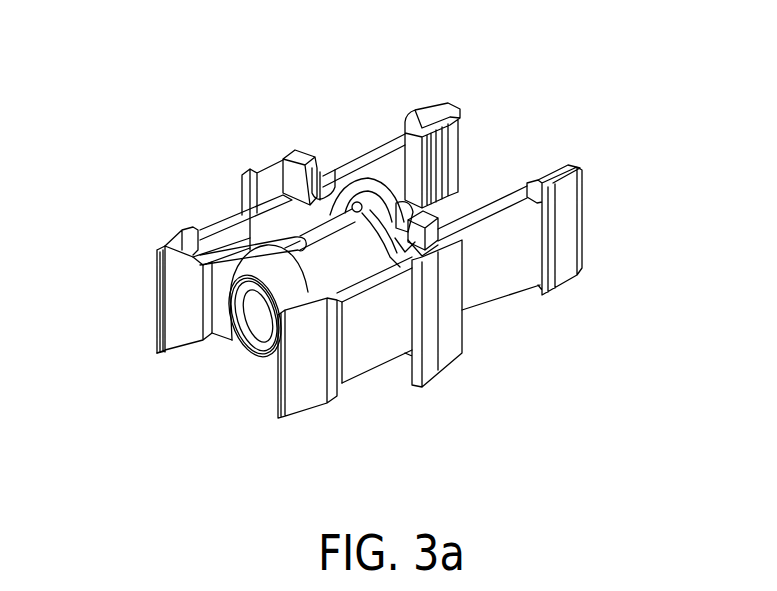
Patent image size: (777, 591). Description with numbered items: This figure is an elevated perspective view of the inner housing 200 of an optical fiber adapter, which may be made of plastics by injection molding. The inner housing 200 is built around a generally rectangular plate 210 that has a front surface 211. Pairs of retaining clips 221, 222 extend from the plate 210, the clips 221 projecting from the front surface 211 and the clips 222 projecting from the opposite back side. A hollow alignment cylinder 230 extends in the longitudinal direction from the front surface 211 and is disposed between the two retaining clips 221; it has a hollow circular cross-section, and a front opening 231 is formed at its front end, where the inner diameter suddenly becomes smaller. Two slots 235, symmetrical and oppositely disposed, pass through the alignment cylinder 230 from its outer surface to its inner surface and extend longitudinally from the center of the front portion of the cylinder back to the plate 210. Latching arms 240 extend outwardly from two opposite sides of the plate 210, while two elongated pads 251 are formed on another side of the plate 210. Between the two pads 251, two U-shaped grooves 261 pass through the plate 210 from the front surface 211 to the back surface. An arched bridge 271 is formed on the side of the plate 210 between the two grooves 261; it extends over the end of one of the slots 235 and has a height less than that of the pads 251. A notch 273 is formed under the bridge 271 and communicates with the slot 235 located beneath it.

The inner housing 200 is at (192, 80).
The plate 210 is at (296, 125).
The front surface 211 is at (425, 250).
The retaining clips 221 is at (180, 316).
The retaining clips 222 is at (440, 108).
The alignment cylinder 230 is at (265, 250).
The front opening 231 is at (268, 318).
The slots 235 is at (290, 247).
The latching arms 240 is at (245, 190).
The elongated pads 251 is at (300, 153).
The grooves 261 is at (333, 165).
The arched bridge 271 is at (372, 178).
The notch 273 is at (265, 211).